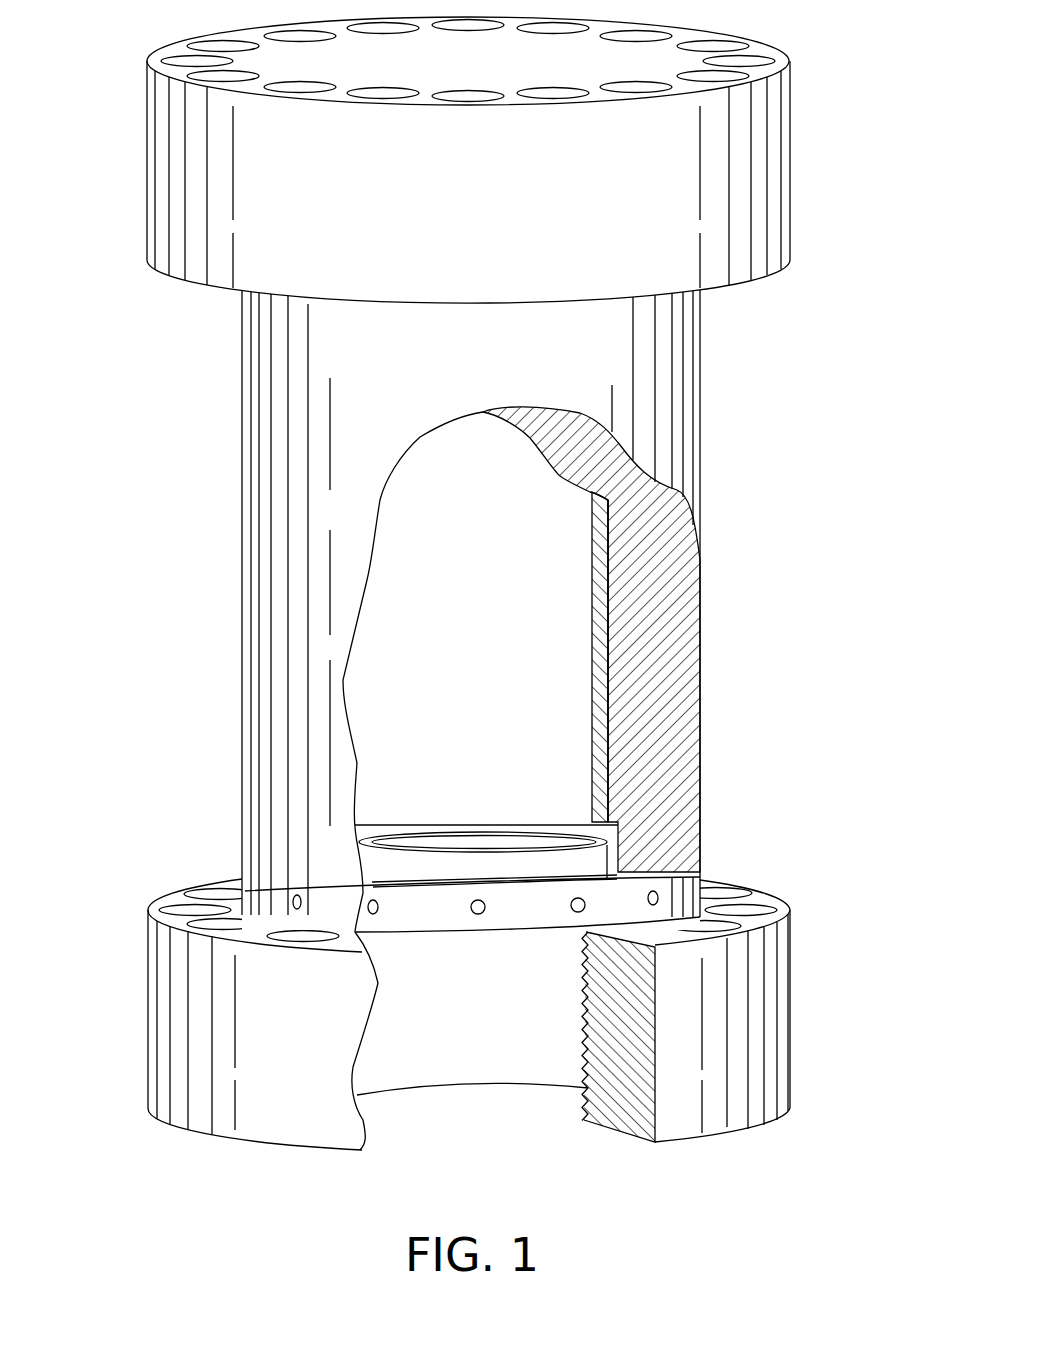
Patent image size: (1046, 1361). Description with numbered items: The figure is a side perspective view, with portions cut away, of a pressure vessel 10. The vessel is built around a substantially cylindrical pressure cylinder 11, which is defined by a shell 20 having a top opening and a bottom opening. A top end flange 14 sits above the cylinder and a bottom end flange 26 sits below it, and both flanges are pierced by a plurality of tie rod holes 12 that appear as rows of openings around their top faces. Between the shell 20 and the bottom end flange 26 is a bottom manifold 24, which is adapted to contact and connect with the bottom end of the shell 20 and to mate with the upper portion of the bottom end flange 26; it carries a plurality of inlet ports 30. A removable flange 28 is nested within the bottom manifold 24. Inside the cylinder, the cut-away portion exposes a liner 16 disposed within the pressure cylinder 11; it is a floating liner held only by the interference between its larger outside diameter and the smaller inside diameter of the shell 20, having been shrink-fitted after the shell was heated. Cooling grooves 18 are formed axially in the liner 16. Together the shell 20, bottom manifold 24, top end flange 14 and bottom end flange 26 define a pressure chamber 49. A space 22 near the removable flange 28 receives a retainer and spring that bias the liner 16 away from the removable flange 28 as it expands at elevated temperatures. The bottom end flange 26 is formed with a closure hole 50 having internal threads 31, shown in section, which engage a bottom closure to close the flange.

The pressure vessel 10 is at (180, 571).
The pressure cylinder 11 is at (706, 388).
The tie rod holes 12 is at (752, 60).
The top end flange 14 is at (755, 202).
The liner 16 is at (603, 597).
The cooling grooves 18 is at (612, 652).
The shell 20 is at (680, 762).
The space 22 is at (612, 843).
The bottom manifold 24 is at (238, 873).
The bottom end flange 26 is at (166, 1060).
The removable flange 28 is at (353, 827).
The inlet ports 30 is at (373, 915).
The internal threads 31 is at (583, 1047).
The pressure chamber 49 is at (517, 523).
The closure hole 50 is at (460, 1103).